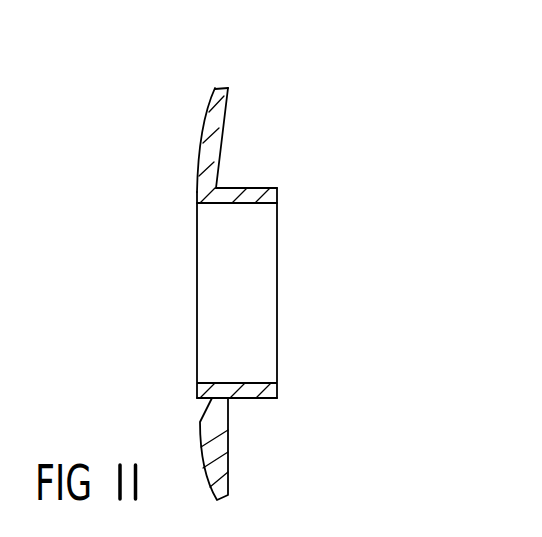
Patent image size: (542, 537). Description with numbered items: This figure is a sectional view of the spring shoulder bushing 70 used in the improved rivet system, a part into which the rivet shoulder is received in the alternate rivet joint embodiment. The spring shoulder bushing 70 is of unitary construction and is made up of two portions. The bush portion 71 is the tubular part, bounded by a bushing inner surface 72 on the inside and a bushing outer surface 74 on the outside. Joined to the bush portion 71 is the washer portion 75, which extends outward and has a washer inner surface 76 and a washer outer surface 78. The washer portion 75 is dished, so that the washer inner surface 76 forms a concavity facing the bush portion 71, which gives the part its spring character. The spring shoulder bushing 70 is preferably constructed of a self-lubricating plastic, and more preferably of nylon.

The spring shoulder bushing 70 is at (216, 283).
The bush portion 71 is at (247, 392).
The bushing inner surface 72 is at (272, 198).
The bushing outer surface 74 is at (259, 187).
The washer portion 75 is at (199, 423).
The washer inner surface 76 is at (227, 140).
The washer outer surface 78 is at (211, 129).